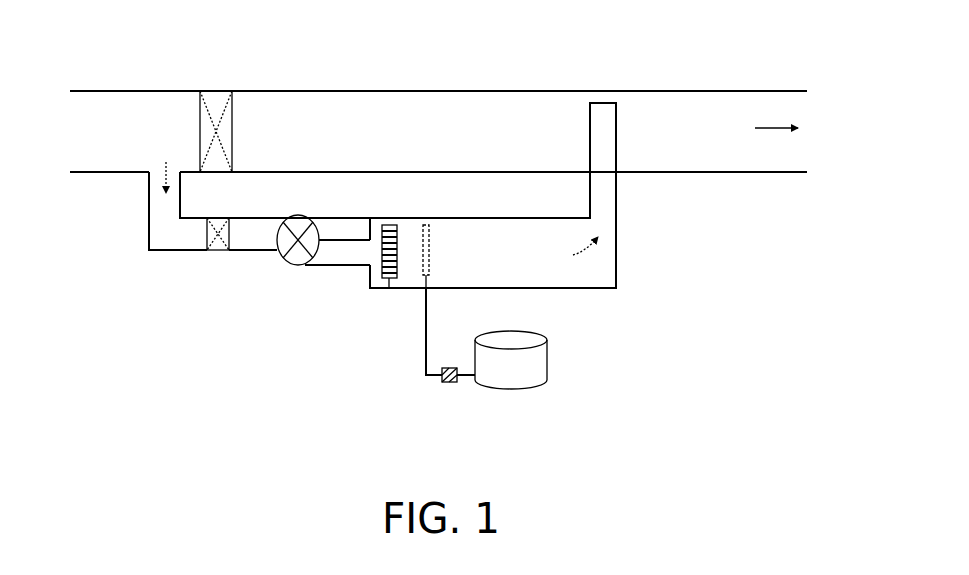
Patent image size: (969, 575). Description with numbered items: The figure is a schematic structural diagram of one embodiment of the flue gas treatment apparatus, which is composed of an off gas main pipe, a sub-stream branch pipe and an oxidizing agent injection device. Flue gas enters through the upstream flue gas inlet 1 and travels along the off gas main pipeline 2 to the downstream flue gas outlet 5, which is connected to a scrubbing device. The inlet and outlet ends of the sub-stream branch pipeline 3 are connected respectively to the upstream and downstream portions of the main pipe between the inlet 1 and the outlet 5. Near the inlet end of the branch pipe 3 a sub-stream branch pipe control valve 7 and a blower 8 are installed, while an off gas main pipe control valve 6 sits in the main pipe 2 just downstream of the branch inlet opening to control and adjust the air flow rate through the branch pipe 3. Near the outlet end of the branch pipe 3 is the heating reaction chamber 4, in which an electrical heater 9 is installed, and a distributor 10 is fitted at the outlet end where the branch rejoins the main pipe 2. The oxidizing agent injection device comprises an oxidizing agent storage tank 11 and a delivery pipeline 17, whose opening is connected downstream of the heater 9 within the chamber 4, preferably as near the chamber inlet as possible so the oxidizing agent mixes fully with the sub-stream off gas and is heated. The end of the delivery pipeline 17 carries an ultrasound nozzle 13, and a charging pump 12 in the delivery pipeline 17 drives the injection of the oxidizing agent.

The upstream flue gas inlet 1 is at (90, 103).
The off gas main pipeline 2 is at (380, 112).
The sub-stream branch pipeline 3 is at (163, 196).
The heating reaction chamber 4 is at (537, 259).
The downstream flue gas outlet 5 is at (733, 125).
The off gas main pipe control valve 6 is at (233, 108).
The sub-stream branch pipe control valve 7 is at (217, 251).
The blower 8 is at (297, 266).
The heater 9 is at (387, 279).
The distributor 10 is at (610, 135).
The oxidizing agent storage tank 11 is at (518, 388).
The charging pump 12 is at (448, 380).
The nozzle 13 is at (432, 248).
The delivery pipeline 17 is at (423, 333).